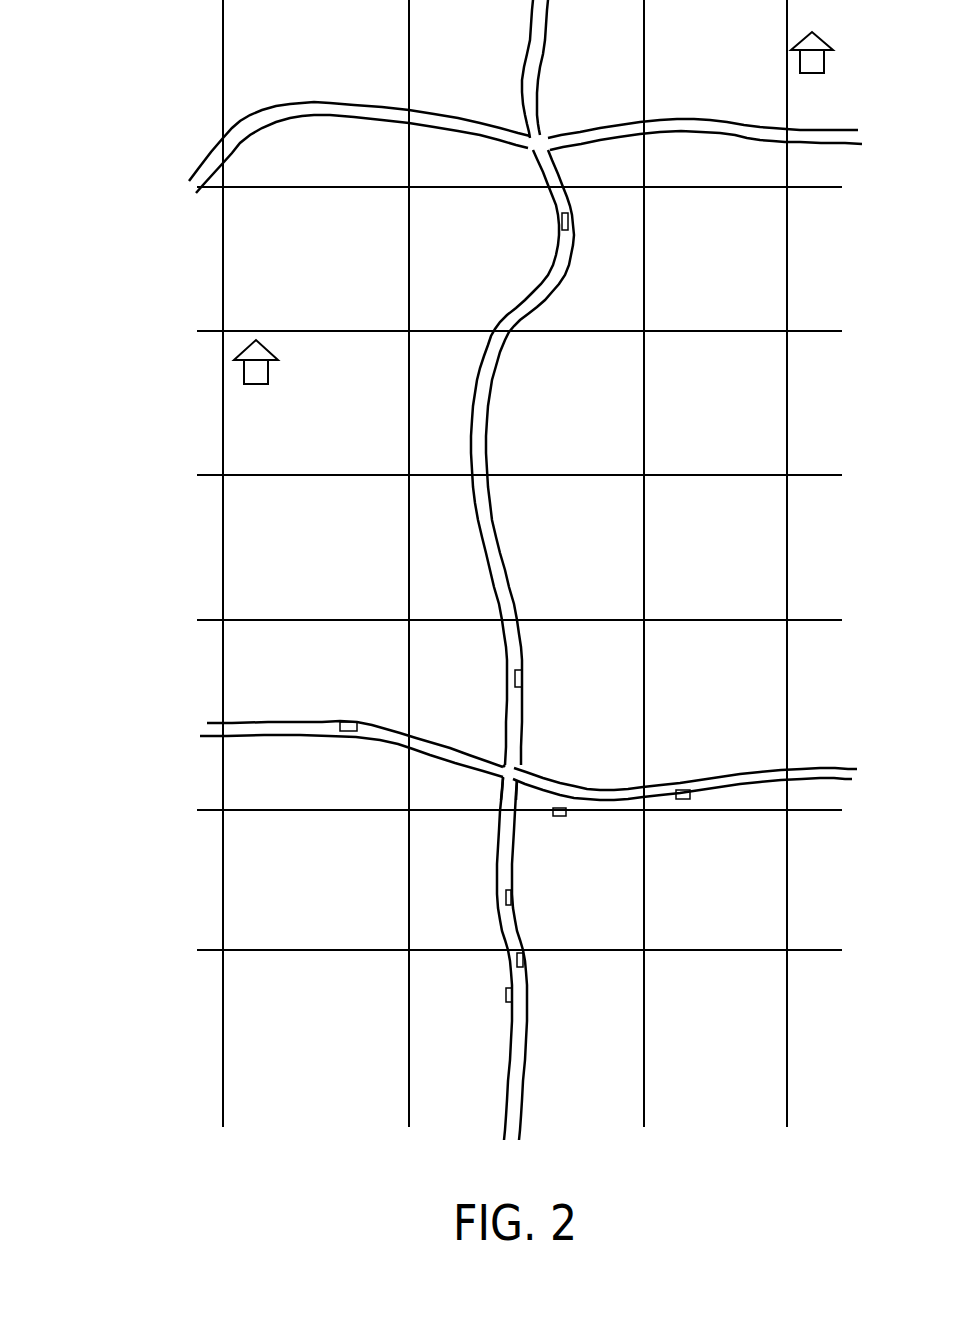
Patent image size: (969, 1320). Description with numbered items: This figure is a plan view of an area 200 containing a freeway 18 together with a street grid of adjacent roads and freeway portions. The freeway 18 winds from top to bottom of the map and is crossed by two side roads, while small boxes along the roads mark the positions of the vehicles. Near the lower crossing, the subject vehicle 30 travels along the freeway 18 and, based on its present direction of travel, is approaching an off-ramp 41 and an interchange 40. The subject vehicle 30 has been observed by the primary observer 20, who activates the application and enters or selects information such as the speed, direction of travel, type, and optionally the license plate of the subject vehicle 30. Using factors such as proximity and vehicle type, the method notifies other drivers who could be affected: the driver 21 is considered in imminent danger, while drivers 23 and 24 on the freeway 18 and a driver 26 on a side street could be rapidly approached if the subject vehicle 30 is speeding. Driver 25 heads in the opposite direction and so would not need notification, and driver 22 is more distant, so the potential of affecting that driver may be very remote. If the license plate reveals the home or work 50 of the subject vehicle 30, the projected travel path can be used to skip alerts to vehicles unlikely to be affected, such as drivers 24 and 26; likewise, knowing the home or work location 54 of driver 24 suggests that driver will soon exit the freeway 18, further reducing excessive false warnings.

The area 200 is at (166, 74).
The freeway 18 is at (509, 590).
The home or work 50 is at (822, 58).
The home or work location 54 is at (266, 368).
The driver 22 is at (570, 225).
The driver 21 is at (524, 680).
The driver 24 is at (347, 722).
The driver 23 is at (688, 800).
The driver 26 is at (558, 817).
The interchange 40 is at (500, 778).
The off-ramp 41 is at (515, 812).
The subject vehicle 30 is at (512, 898).
The primary observer 20 is at (524, 958).
The driver 25 is at (508, 1002).